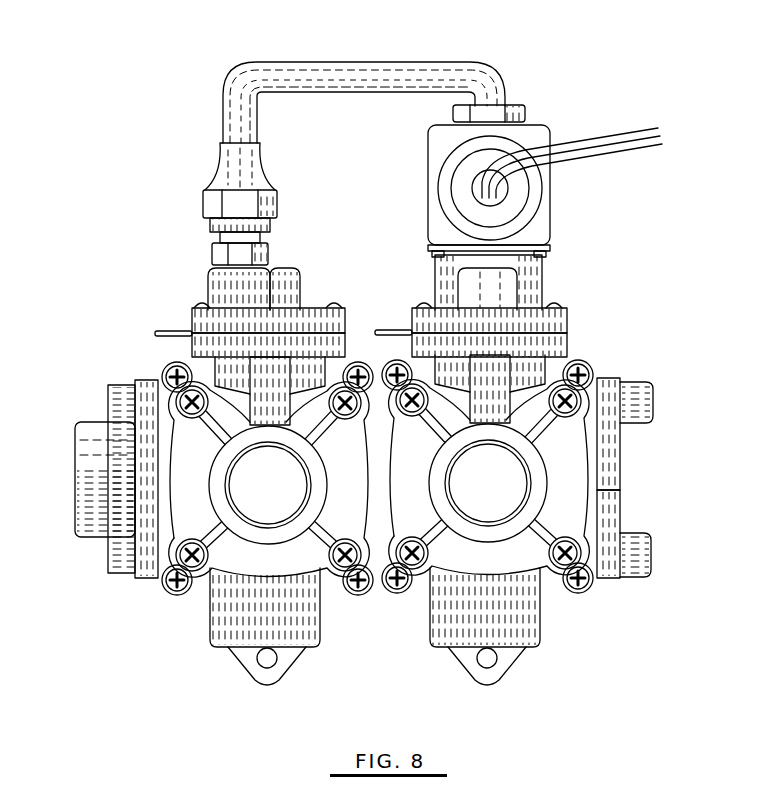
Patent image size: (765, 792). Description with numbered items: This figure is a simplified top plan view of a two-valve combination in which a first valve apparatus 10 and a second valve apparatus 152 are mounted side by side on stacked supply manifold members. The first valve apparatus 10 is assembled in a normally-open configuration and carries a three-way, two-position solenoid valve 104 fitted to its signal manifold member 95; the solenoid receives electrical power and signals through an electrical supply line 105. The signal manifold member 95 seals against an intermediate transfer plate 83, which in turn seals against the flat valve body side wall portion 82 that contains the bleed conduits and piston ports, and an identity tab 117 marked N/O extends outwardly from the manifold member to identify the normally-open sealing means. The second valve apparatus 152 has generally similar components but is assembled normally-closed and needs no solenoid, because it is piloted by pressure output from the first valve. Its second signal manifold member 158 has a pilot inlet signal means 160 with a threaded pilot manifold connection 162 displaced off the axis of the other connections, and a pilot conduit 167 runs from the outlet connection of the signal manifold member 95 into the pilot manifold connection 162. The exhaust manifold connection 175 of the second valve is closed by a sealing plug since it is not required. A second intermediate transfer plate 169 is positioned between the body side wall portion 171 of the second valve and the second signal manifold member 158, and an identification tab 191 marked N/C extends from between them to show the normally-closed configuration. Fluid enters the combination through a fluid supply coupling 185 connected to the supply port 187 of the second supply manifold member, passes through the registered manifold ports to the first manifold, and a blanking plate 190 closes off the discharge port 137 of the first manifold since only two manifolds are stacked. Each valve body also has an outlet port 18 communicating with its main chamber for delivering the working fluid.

The valve apparatus 10 is at (607, 268).
The pilot conduit 167 is at (371, 72).
The solenoid valve 104 is at (551, 216).
The electrical supply line 105 is at (592, 128).
The pilot manifold connection 162 is at (211, 254).
The pilot inlet signal means 160 is at (217, 289).
The exhaust manifold connection 175 is at (283, 285).
The second signal manifold member 158 is at (307, 303).
The second intermediate transfer plate 169 is at (209, 340).
The body side wall portion 171 is at (206, 352).
The identification tab 191 is at (160, 331).
The identity tab 117 is at (391, 329).
The signal manifold member 95 is at (568, 318).
The intermediate transfer plate 83 is at (566, 340).
The valve body side wall portion 82 is at (562, 352).
The blanking plate 190 is at (624, 465).
The discharge port 137 is at (622, 492).
The supply port 187 is at (137, 462).
The fluid supply coupling 185 is at (108, 508).
The second valve apparatus 152 is at (194, 626).
The outlet port 18 is at (468, 642).